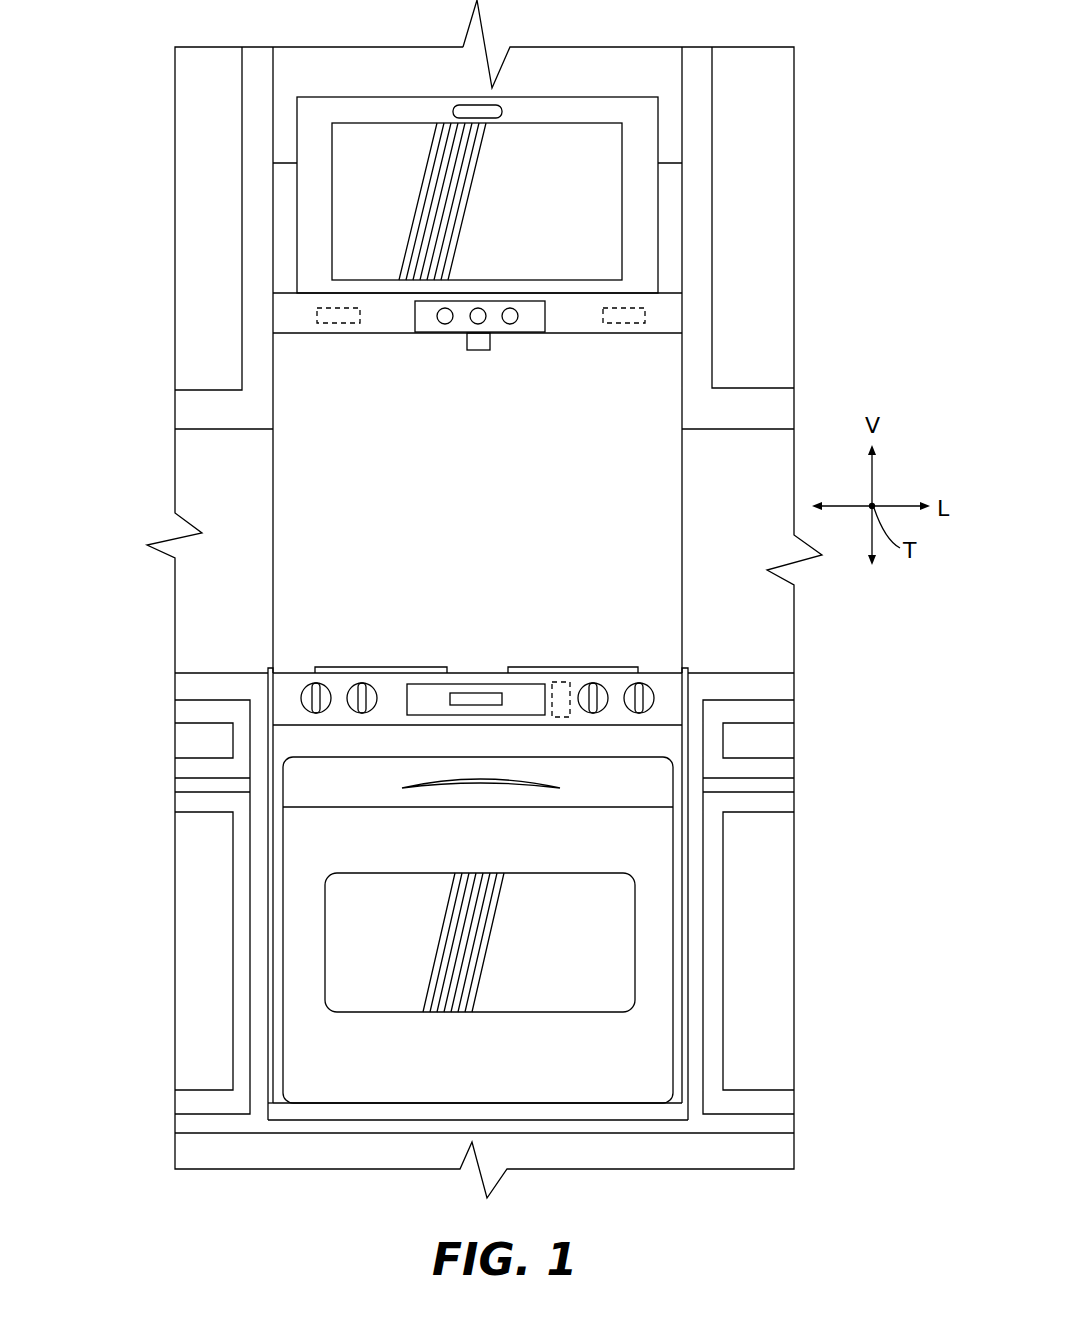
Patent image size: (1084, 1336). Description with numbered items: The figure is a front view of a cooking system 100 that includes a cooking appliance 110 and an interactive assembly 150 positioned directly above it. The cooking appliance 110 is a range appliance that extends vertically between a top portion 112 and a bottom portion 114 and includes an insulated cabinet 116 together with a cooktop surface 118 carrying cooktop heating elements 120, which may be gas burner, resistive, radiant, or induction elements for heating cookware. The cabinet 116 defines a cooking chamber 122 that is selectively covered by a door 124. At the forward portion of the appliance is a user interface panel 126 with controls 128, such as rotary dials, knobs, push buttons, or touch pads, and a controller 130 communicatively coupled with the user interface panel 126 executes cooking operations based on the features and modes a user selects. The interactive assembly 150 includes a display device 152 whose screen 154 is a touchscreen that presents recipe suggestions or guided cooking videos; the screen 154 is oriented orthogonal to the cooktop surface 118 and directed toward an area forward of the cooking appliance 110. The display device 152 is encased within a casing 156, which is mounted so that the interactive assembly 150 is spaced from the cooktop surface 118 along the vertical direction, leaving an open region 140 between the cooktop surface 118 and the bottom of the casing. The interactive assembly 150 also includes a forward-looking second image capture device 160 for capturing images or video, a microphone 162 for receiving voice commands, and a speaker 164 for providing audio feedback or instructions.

The cooking system 100 is at (113, 108).
The cooking appliance 110 is at (487, 844).
The top portion 112 is at (264, 662).
The bottom portion 114 is at (323, 1128).
The cabinet 116 is at (262, 1105).
The cooktop surface 118 is at (393, 620).
The cooktop heating elements 120 is at (378, 667).
The cooking chamber 122 is at (420, 948).
The door 124 is at (576, 930).
The user interface panel 126 is at (571, 668).
The controls 128 is at (657, 702).
The controller 130 is at (550, 680).
The open region 140 is at (421, 508).
The interactive assembly 150 is at (528, 242).
The display device 152 is at (641, 123).
The screen 154 is at (350, 197).
The casing 156 is at (660, 318).
The second image capture device 160 is at (463, 105).
The microphone 162 is at (335, 326).
The speaker 164 is at (641, 326).